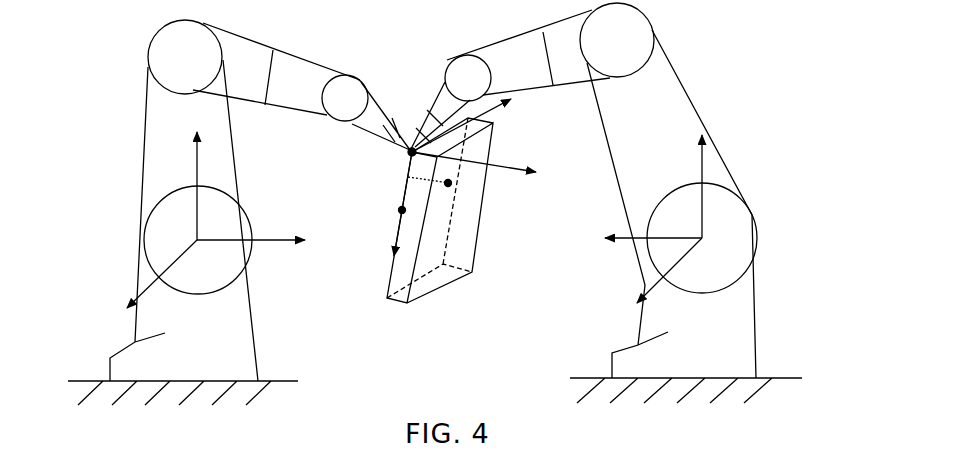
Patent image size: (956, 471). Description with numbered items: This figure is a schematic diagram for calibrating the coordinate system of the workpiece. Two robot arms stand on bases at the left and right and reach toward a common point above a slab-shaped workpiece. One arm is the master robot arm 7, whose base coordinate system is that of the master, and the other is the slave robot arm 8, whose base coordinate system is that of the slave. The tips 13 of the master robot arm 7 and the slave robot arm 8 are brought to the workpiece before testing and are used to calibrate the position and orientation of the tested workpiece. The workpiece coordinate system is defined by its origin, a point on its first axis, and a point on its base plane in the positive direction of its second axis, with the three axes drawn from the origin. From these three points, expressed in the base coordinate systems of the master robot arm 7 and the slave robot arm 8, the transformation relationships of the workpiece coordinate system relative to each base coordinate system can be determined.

The master robot arm 7 is at (242, 357).
The slave robot arm 8 is at (637, 362).
The tips 13 is at (412, 150).